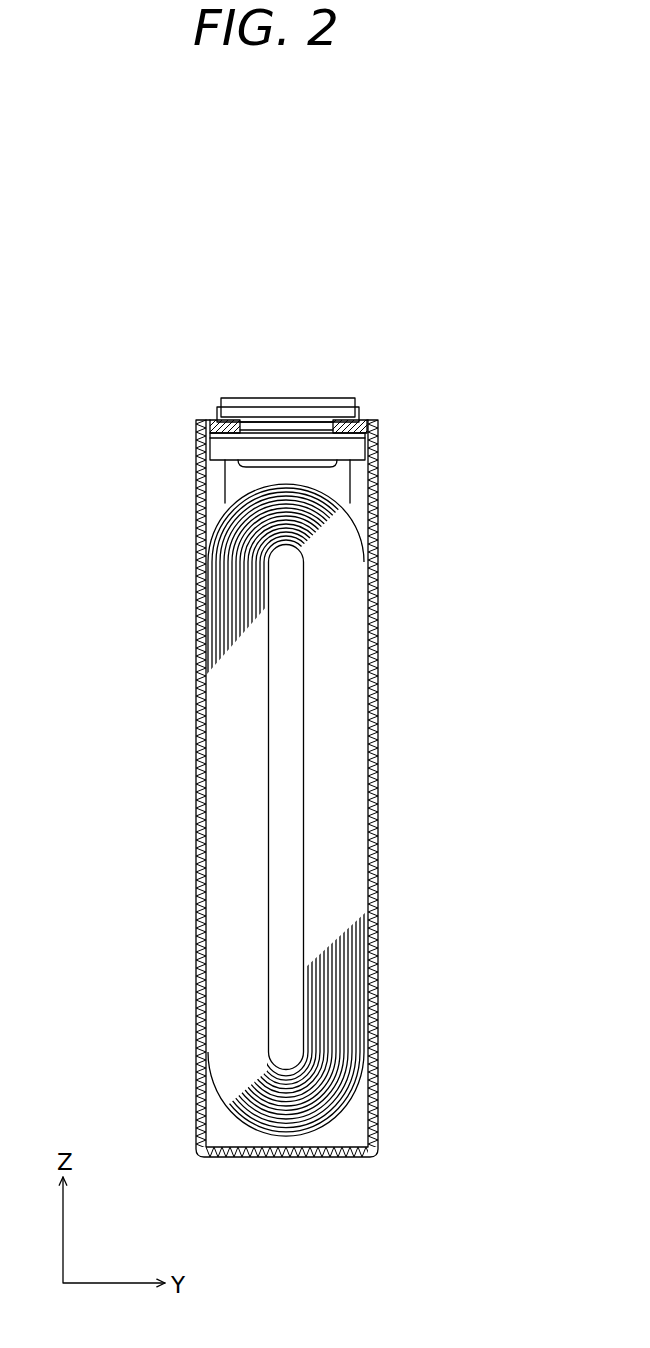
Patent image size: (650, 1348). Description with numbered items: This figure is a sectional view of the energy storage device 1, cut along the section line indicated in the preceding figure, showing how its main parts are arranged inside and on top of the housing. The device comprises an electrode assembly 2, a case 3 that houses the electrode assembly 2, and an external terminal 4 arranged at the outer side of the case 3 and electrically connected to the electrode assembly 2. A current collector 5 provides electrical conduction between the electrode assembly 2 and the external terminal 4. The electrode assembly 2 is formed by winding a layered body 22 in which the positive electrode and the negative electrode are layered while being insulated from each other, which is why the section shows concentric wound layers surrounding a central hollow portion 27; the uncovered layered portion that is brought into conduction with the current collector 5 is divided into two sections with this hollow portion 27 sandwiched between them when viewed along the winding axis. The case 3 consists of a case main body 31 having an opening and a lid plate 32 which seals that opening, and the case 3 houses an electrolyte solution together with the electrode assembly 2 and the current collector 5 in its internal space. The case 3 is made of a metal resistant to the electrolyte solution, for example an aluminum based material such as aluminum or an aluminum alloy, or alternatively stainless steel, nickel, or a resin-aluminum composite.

The energy storage device 1 is at (422, 298).
The electrode assembly 2 is at (325, 492).
The layered body 22 is at (360, 523).
The hollow portion 27 is at (285, 827).
The case 3 is at (72, 403).
The case main body 31 is at (197, 477).
The lid plate 32 is at (203, 418).
The external terminal 4 is at (277, 398).
The current collector 5 is at (220, 497).